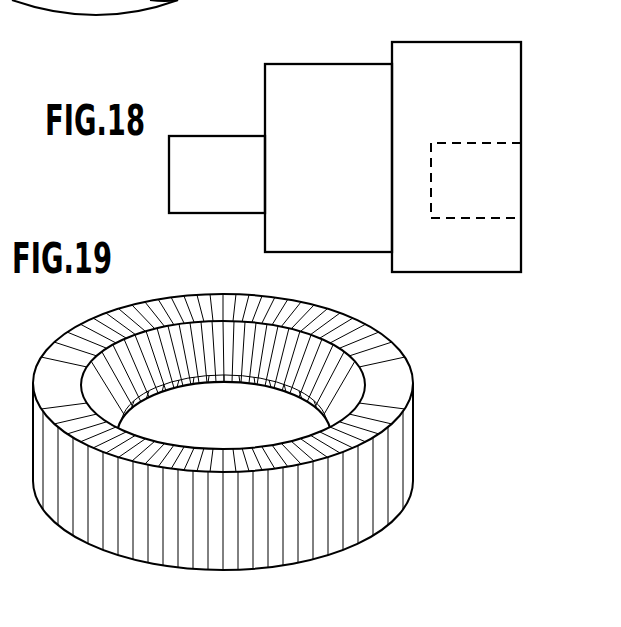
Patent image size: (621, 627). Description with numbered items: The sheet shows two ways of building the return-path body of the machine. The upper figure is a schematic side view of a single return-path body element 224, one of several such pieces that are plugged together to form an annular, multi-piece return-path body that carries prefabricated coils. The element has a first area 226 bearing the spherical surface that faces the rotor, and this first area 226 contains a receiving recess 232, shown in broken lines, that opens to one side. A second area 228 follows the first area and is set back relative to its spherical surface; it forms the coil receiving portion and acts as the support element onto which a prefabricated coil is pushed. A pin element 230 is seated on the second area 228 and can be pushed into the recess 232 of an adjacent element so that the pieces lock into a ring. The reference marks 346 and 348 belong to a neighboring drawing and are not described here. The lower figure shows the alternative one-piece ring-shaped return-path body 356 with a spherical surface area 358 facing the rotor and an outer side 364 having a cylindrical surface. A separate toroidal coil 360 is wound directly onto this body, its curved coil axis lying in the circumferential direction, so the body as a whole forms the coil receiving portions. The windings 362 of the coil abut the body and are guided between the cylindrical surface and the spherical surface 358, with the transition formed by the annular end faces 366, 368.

In FIG. 18, the return-path body element 224 is at (391, 172).
In FIG. 18, the first area 226 is at (495, 253).
In FIG. 18, the second area 228 is at (343, 88).
In FIG. 18, the pin element 230 is at (217, 160).
In FIG. 18, the receiving recess 232 is at (500, 215).
In FIG. 18, the component 346 is at (221, 13).
In FIG. 18, the component 348 is at (131, 0).
In FIG. 19, the return-path body 356 is at (269, 427).
In FIG. 19, the spherical surface area 358 is at (251, 353).
In FIG. 19, the coil 360 is at (163, 547).
In FIG. 19, the windings 362 is at (127, 545).
In FIG. 19, the outer side 364 is at (269, 501).
In FIG. 19, the annular end face 366 is at (193, 305).
In FIG. 19, the annular end face 368 is at (268, 381).